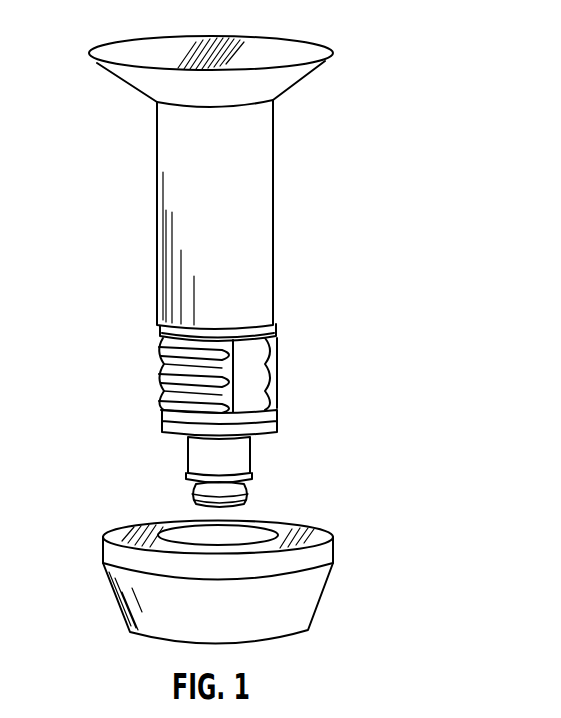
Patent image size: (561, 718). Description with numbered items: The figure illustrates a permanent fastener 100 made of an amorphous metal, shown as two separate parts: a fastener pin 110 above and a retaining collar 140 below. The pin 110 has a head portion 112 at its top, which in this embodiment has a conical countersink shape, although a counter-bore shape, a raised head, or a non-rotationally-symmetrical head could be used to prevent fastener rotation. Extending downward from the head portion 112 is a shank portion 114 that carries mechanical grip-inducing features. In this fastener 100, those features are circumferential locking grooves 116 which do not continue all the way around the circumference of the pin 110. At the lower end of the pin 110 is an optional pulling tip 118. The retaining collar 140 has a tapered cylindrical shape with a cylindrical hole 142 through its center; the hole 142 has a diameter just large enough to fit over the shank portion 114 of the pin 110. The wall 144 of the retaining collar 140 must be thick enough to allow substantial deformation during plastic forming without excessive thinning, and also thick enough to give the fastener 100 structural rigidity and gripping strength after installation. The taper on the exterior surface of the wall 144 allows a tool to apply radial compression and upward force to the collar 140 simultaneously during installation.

The permanent fastener 100 is at (275, 340).
The fastener pin 110 is at (158, 213).
The head portion 112 is at (124, 79).
The shank portion 114 is at (297, 365).
The circumferential locking grooves 116 is at (160, 343).
The pulling tip 118 is at (258, 437).
The retaining collar 140 is at (183, 545).
The cylindrical hole 142 is at (192, 538).
The wall 144 is at (126, 529).